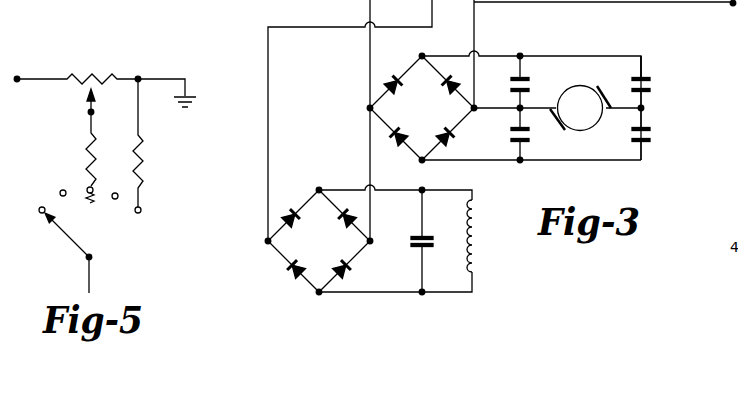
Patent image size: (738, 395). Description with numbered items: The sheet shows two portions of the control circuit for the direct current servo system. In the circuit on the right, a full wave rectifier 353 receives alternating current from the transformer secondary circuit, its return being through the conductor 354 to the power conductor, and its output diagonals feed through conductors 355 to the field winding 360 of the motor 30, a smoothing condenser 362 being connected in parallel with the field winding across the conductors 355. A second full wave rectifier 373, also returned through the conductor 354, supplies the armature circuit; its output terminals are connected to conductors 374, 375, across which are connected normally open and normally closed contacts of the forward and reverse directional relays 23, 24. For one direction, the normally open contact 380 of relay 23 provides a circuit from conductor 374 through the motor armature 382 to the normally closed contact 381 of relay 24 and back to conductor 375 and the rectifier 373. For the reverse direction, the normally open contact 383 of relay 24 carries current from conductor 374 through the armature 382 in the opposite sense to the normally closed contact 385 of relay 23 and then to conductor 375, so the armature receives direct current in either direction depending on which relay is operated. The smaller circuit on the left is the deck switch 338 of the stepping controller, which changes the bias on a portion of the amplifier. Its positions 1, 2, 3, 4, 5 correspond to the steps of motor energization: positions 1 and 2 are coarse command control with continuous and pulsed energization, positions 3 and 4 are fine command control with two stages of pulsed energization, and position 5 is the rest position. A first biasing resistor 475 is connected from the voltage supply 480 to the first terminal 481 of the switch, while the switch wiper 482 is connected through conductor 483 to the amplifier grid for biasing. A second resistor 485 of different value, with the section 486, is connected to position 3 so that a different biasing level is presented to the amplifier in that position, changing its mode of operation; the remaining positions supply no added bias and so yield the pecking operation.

In FIG. 3, the directional relay 23 is at (539, 57).
In FIG. 3, the directional relay 24 is at (672, 96).
In FIG. 3, the servo motor 30 is at (557, 101).
In FIG. 3, the full wave rectifier 353 is at (334, 249).
In FIG. 3, the conductor 354 is at (369, 142).
In FIG. 3, the conductors 355 is at (400, 183).
In FIG. 3, the field winding 360 is at (467, 248).
In FIG. 3, the smoothing condenser 362 is at (428, 235).
In FIG. 3, the full wave rectifier 373 is at (436, 116).
In FIG. 3, the conductor 374 is at (507, 57).
In FIG. 3, the conductor 375 is at (492, 160).
In FIG. 3, the normally open contact 380 is at (510, 82).
In FIG. 3, the normally closed contact 381 is at (652, 133).
In FIG. 3, the motor armature 382 is at (594, 116).
In FIG. 3, the normally open contact 383 is at (652, 83).
In FIG. 3, the normally closed contact 385 is at (510, 132).
In FIG. 5, the deck switch 338 is at (115, 235).
In FIG. 5, the first biasing resistor 475 is at (140, 155).
In FIG. 5, the voltage supply 480 is at (17, 79).
In FIG. 5, the first terminal of the switch 481 is at (141, 213).
In FIG. 5, the switch wiper 482 is at (65, 235).
In FIG. 5, the conductor 483 is at (91, 276).
In FIG. 5, the biasing resistor 485 is at (85, 137).
In FIG. 5, the resistor section 486 is at (85, 208).
In FIG. 5, the switch position 1 is at (135, 200).
In FIG. 5, the switch position 2 is at (111, 188).
In FIG. 5, the switch position 3 is at (85, 183).
In FIG. 5, the switch position 4 is at (58, 187).
In FIG. 5, the switch position 5 is at (36, 207).